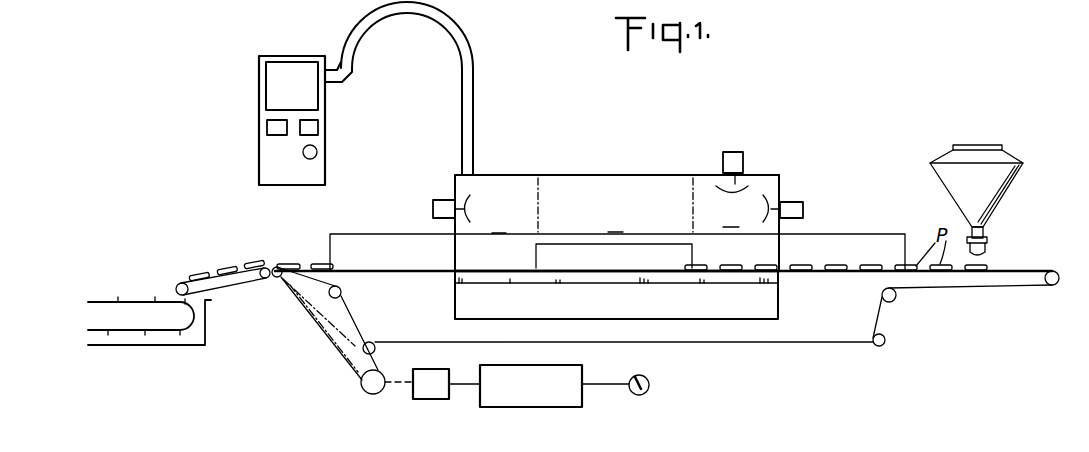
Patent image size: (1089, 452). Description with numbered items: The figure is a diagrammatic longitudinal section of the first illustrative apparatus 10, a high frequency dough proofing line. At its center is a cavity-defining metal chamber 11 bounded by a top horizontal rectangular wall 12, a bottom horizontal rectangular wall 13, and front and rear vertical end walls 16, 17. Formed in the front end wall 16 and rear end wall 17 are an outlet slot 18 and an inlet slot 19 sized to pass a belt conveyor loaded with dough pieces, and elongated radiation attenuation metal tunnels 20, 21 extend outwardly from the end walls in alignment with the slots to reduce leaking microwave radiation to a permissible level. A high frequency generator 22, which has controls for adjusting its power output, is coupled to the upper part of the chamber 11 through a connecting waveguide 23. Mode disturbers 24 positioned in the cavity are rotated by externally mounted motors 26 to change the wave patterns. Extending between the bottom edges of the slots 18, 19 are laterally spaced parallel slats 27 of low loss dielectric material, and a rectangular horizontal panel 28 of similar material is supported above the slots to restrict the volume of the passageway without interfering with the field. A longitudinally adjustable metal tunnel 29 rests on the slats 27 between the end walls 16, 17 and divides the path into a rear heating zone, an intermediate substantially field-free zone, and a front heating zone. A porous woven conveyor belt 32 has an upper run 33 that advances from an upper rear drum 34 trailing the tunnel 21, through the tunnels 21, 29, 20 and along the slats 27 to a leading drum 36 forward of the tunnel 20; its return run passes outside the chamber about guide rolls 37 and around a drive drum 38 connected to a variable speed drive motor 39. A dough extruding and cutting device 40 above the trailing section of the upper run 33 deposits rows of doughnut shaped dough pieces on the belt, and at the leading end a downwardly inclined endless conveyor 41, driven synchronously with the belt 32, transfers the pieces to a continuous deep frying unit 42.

The apparatus 10 is at (624, 192).
The cavity-defining metal chamber 11 is at (782, 186).
The top horizontal rectangular wall 12 is at (598, 167).
The bottom horizontal rectangular wall 13 is at (776, 321).
The front end wall 16 is at (455, 180).
The rear end wall 17 is at (786, 229).
The outlet slot 18 is at (458, 263).
The inlet slot 19 is at (776, 265).
The radiation attenuation metal tunnel 20 is at (377, 243).
The radiation attenuation metal tunnel 21 is at (864, 245).
The high frequency generator 22 is at (258, 158).
The connecting waveguide 23 is at (475, 61).
The mode disturber 24 is at (746, 188).
The motor 26 is at (734, 152).
The slats 27 is at (595, 284).
The rectangular horizontal panel 28 is at (556, 234).
The metal tunnel 29 is at (641, 244).
The conveyor belt 32 is at (430, 343).
The upper run 33 is at (383, 272).
The upper rear drum 34 is at (1062, 265).
The leading drum 36 is at (276, 279).
The guide rolls 37 is at (371, 342).
The drive drum 38 is at (372, 395).
The variable speed drive motor 39 is at (528, 396).
The dough extruding and cutting device 40 is at (990, 194).
The inclined endless conveyor 41 is at (234, 287).
The continuous deep frying unit 42 is at (157, 341).